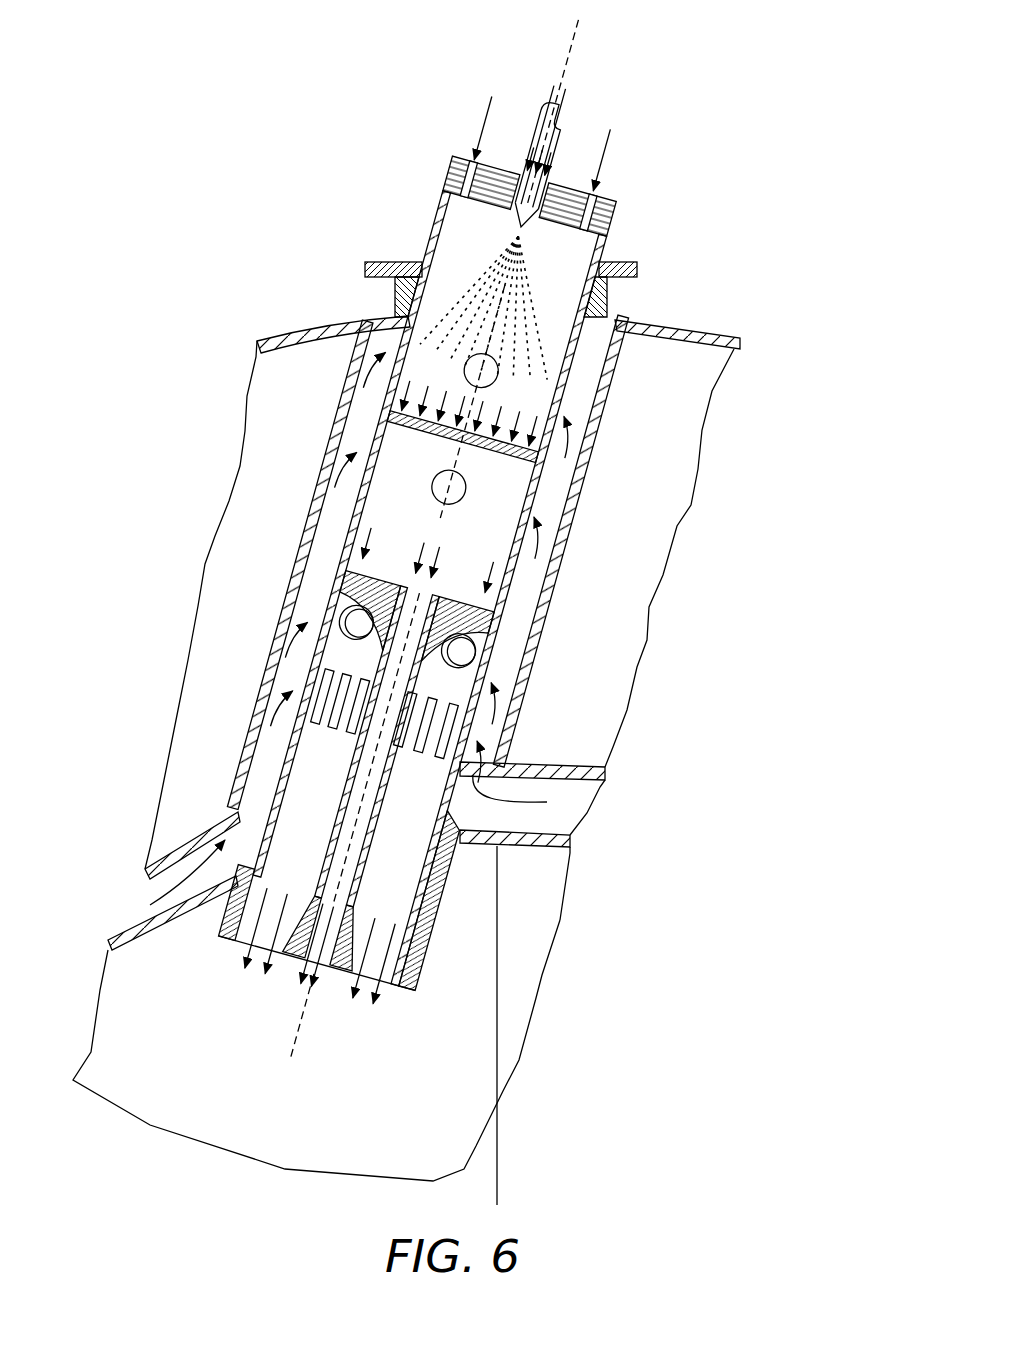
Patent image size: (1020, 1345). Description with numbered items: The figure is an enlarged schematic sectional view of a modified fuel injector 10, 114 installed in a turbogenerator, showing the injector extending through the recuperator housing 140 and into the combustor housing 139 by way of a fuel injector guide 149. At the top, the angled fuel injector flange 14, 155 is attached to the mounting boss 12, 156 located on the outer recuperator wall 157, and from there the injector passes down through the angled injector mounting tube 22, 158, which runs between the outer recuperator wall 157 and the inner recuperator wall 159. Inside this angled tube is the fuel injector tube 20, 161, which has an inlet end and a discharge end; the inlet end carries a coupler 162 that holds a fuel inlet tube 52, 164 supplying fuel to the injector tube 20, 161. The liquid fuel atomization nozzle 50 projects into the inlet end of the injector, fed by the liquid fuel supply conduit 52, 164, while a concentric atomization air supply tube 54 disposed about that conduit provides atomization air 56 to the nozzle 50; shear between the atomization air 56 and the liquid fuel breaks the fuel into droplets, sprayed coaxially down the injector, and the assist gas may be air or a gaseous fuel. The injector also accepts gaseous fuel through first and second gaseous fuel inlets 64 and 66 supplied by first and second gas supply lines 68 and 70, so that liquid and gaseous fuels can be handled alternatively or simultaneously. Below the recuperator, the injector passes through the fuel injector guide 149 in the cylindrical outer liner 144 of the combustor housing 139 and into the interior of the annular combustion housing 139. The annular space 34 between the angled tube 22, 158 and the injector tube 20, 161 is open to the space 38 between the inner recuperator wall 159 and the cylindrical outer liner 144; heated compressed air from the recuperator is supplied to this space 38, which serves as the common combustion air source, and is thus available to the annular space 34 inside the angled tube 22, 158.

The fuel injector 10 is at (525, 577).
The fuel injector 114 is at (525, 577).
The flange 12 is at (678, 288).
The mounting boss 156 is at (606, 299).
The flange 14 is at (340, 265).
The angled fuel injector flange 155 is at (387, 259).
The inner tube 20 is at (594, 610).
The fuel injector tube 161 is at (560, 480).
The outer tube 22 is at (661, 541).
The angled injector mounting tube 158 is at (603, 414).
The annular space 34 is at (512, 616).
The space 38 is at (164, 880).
The liquid fuel atomization nozzle 50 is at (518, 166).
The liquid fuel supply conduit 52 is at (618, 112).
The fuel inlet tube 164 is at (558, 90).
The concentric atomization air supply tube 54 is at (529, 100).
The atomization air 56 is at (563, 133).
The first gaseous fuel inlet 64 is at (452, 157).
The second gaseous fuel inlet 66 is at (603, 210).
The first gas supply line 68 is at (483, 120).
The second gas supply line 70 is at (604, 152).
The recuperator housing 140 is at (312, 315).
The outer recuperator wall 157 is at (720, 333).
The coupler 162 is at (633, 216).
The inner recuperator wall 159 is at (585, 768).
The combustor housing 139 is at (553, 826).
The cylindrical outer liner 144 is at (545, 843).
The fuel injector guide 149 is at (433, 943).